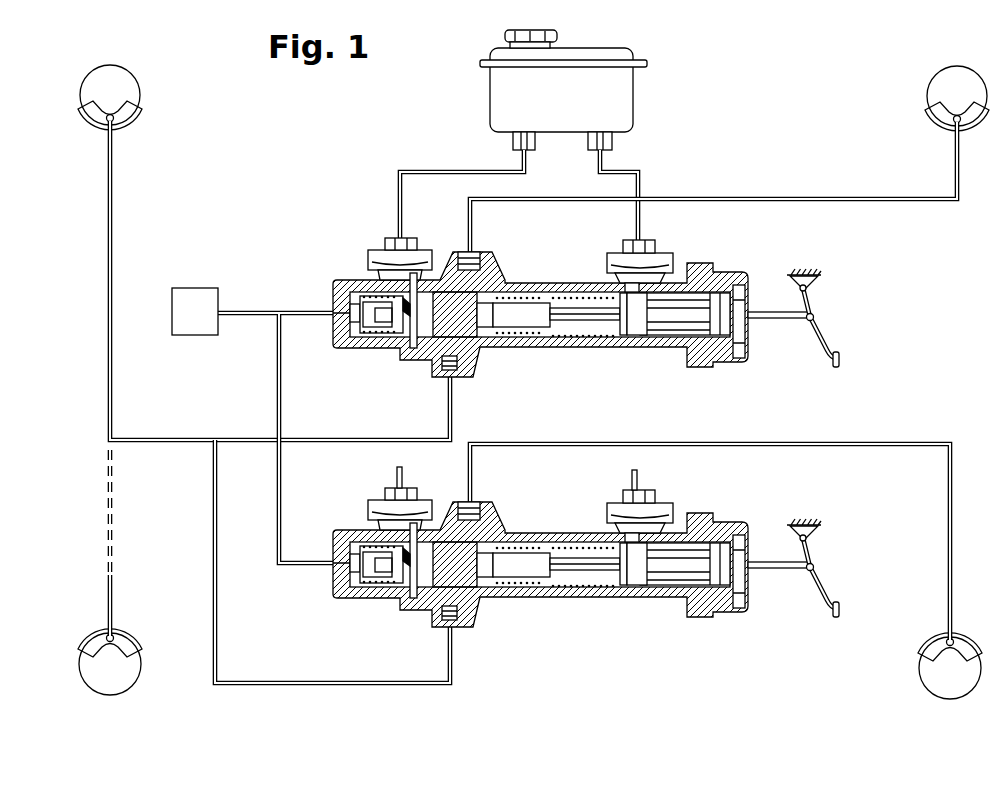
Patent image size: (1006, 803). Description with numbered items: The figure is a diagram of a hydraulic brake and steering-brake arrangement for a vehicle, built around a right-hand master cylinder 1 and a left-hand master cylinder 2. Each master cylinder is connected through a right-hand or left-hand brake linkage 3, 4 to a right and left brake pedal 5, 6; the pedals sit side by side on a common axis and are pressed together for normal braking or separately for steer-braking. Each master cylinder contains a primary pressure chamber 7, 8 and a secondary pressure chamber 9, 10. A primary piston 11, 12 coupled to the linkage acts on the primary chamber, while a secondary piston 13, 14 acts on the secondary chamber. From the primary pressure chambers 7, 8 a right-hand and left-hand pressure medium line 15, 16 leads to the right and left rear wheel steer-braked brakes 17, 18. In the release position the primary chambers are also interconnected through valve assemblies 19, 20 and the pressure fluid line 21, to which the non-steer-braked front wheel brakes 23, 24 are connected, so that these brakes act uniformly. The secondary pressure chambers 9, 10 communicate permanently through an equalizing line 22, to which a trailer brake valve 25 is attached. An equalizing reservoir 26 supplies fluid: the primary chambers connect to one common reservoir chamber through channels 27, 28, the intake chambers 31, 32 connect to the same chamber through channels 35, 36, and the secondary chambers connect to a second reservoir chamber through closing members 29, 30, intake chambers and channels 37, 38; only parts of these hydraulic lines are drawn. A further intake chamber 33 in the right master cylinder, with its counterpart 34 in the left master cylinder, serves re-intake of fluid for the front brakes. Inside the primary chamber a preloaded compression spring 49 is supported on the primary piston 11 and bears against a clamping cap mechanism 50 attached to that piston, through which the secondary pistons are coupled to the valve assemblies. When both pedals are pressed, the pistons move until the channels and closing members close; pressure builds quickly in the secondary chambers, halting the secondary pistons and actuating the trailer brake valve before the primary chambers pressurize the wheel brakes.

The right-hand master cylinder 1 is at (346, 268).
The left-hand master cylinder 2 is at (346, 520).
The right-hand brake linkage 3 is at (777, 320).
The left-hand brake linkage 4 is at (776, 570).
The right brake pedal 5 is at (840, 360).
The left brake pedal 6 is at (840, 610).
The primary pressure chamber 7 is at (602, 328).
The primary pressure chamber 8 is at (602, 578).
The secondary pressure chamber 9 is at (357, 325).
The secondary pressure chamber 10 is at (357, 575).
The primary piston 11 is at (683, 318).
The primary piston 12 is at (683, 568).
The secondary piston 13 is at (370, 330).
The secondary piston 14 is at (370, 580).
The right-hand pressure medium line 15 is at (889, 202).
The left-hand pressure medium line 16 is at (885, 447).
The right-hand rear wheel steer-braked brake 17 is at (961, 123).
The left-hand rear wheel steer-braked brake 18 is at (953, 640).
The valve assembly 19 is at (478, 338).
The valve assembly 20 is at (478, 588).
The pressure fluid line 21 is at (112, 232).
The equalizing line 22 is at (278, 407).
The right-hand non-steer braked front wheel brake 23 is at (115, 121).
The left-hand non-steer braked front wheel brake 24 is at (113, 634).
The trailer brake valve 25 is at (192, 288).
The equalizing reservoir 26 is at (623, 103).
The channel 27 is at (614, 268).
The channel 28 is at (614, 518).
The closing member 29 is at (446, 270).
The closing member 30 is at (446, 520).
The intake chamber 31 is at (650, 340).
The intake chamber 32 is at (650, 590).
The intake chamber 33 is at (426, 345).
The valve pin 34 is at (426, 595).
The channel 35 is at (658, 272).
The channel 36 is at (658, 522).
The channel 37 is at (404, 266).
The channel 38 is at (404, 516).
The compression spring 49 is at (582, 338).
The clamping cap mechanism 50 is at (549, 338).